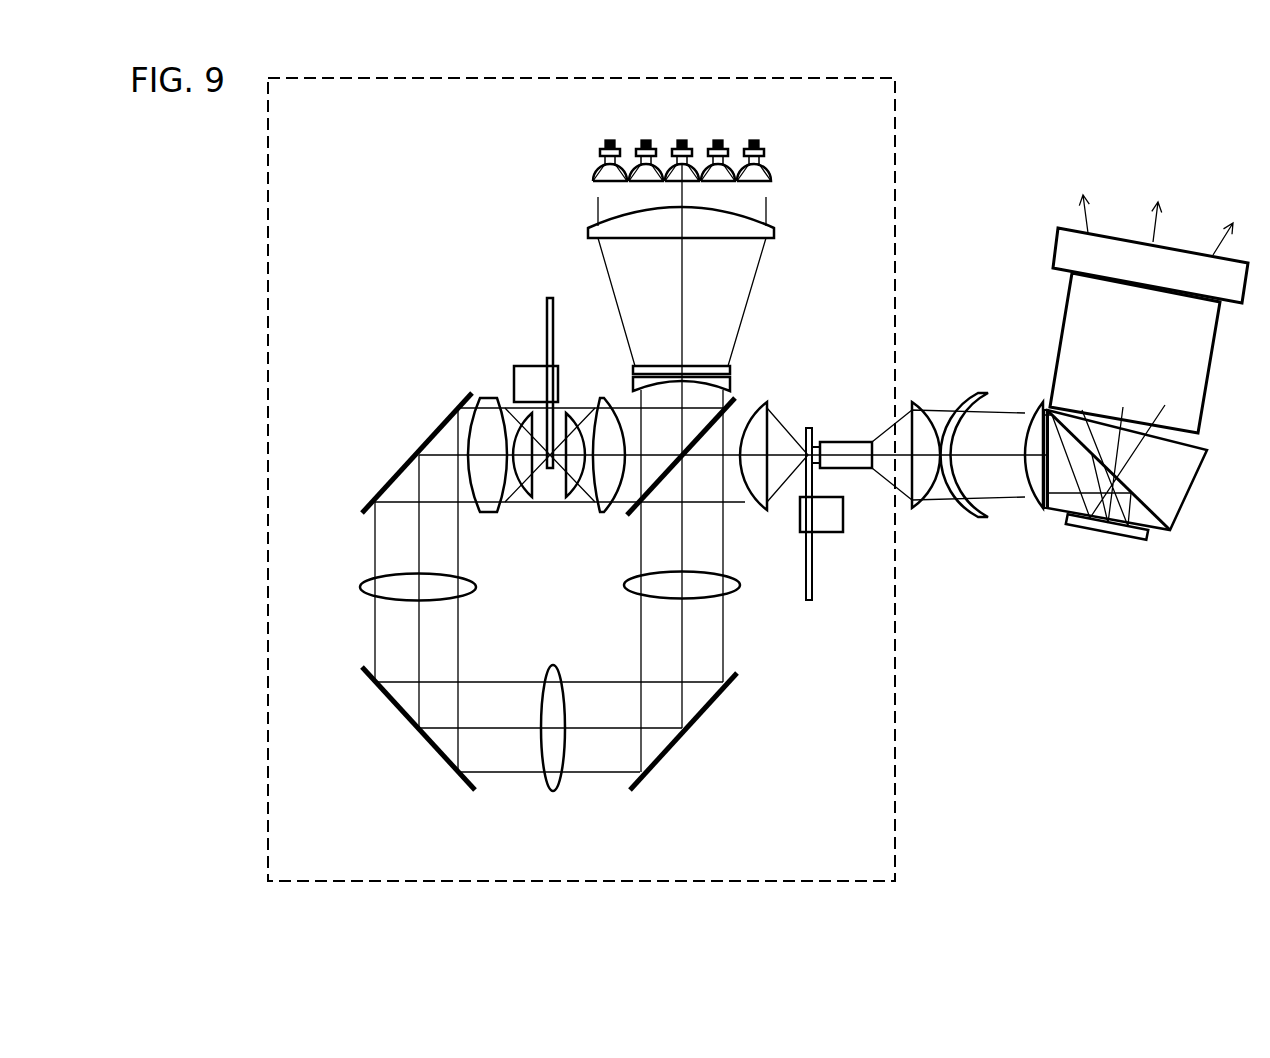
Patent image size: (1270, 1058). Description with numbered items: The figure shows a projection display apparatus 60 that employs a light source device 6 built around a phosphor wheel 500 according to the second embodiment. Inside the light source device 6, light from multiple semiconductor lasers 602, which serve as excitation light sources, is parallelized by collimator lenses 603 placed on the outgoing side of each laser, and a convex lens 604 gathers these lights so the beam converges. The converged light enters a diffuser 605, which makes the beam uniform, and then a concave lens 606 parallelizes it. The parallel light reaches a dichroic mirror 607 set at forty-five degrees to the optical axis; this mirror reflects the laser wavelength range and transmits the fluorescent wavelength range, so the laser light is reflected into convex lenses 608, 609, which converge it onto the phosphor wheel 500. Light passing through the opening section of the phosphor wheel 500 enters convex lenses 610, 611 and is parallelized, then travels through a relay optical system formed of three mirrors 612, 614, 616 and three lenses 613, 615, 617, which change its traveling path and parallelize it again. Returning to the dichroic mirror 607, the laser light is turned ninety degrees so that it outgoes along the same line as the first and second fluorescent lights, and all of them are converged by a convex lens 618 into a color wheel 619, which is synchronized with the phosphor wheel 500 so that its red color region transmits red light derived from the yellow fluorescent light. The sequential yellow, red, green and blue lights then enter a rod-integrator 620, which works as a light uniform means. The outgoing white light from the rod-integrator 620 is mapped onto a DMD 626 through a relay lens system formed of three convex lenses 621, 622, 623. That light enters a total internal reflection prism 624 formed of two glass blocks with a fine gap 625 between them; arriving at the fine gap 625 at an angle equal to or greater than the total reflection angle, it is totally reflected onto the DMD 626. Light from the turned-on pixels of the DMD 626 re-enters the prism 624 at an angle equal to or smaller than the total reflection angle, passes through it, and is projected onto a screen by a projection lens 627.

The light source device 6 is at (896, 180).
The projection display apparatus 60 is at (1137, 348).
The phosphor wheel 500 is at (547, 300).
The semiconductor lasers 602 is at (762, 153).
The collimator lenses 603 is at (770, 186).
The convex lens 604 is at (776, 234).
The diffuser 605 is at (732, 370).
The concave lens 606 is at (732, 384).
The dichroic mirror 607 is at (737, 400).
The convex lens 608 is at (592, 400).
The convex lens 609 is at (567, 413).
The convex lens 610 is at (523, 423).
The convex lens 611 is at (498, 397).
The mirror 612 is at (387, 477).
The lens 613 is at (362, 590).
The mirror 614 is at (407, 723).
The lens 615 is at (553, 792).
The mirror 616 is at (698, 720).
The lens 617 is at (736, 596).
The convex lens 618 is at (763, 512).
The color wheel 619 is at (828, 532).
The rod-integrator 620 is at (850, 442).
The convex lens 621 is at (913, 402).
The convex lens 622 is at (980, 518).
The convex lens 623 is at (1045, 412).
The total internal reflection prism 624 is at (1199, 462).
The fine gap 625 is at (1150, 510).
The DMD 626 is at (1100, 540).
The projection lens 627 is at (1063, 318).